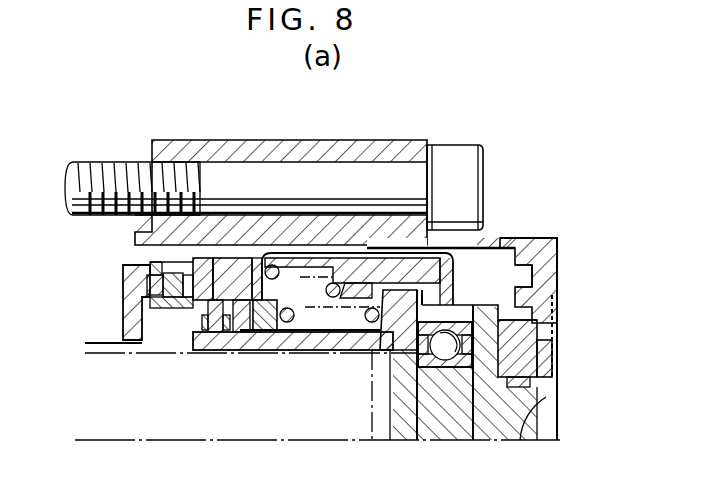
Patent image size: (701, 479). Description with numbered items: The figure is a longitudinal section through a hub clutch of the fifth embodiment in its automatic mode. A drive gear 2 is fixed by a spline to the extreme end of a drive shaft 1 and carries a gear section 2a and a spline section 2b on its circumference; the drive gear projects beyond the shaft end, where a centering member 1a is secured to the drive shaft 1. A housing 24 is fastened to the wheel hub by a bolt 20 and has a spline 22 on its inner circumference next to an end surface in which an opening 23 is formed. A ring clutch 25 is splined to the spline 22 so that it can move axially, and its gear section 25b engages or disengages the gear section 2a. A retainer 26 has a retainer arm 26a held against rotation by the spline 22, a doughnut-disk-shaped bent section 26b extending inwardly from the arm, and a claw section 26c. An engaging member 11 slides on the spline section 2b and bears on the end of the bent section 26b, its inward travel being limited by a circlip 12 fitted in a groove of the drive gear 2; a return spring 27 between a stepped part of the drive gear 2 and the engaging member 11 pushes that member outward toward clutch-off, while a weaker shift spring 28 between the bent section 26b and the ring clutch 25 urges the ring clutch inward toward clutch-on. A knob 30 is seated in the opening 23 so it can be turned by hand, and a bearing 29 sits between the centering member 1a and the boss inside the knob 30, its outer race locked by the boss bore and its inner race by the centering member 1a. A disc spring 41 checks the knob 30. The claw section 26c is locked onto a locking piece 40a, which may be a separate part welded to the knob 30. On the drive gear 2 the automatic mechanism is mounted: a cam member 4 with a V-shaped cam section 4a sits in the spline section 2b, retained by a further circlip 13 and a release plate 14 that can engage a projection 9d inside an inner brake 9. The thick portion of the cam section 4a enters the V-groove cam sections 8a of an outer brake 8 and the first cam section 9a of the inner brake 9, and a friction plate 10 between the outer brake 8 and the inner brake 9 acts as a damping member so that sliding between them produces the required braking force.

The drive shaft 1 is at (100, 413).
The centering member 1a is at (392, 419).
The drive gear 2 is at (362, 332).
The gear section 2a is at (402, 358).
The spline section 2b is at (315, 340).
The cam member 4 is at (220, 243).
The cam section 4a is at (197, 243).
The outer brake 8 is at (124, 313).
The cam sections 8a is at (140, 187).
The inner brake 9 is at (165, 305).
The first cam section 9a is at (168, 262).
The projection 9d is at (172, 310).
The friction plate 10 is at (152, 268).
The engaging member 11 is at (243, 332).
The circlip 12 is at (188, 310).
The circlip 13 is at (226, 332).
The release plate 14 is at (208, 332).
The bolt 20 is at (460, 182).
The spline 22 is at (487, 255).
The opening 23 is at (541, 389).
The housing 24 is at (547, 253).
The ring clutch 25 is at (340, 288).
The gear section 25b is at (418, 235).
The retainer 26 is at (372, 252).
The retainer arm 26a is at (320, 265).
The bent section 26b is at (255, 262).
The claw section 26c is at (462, 290).
The return spring 27 is at (268, 332).
The shift spring 28 is at (249, 202).
The bearing 29 is at (460, 337).
The knob 30 is at (500, 423).
The locking piece 40a is at (518, 250).
The disc spring 41 is at (545, 348).